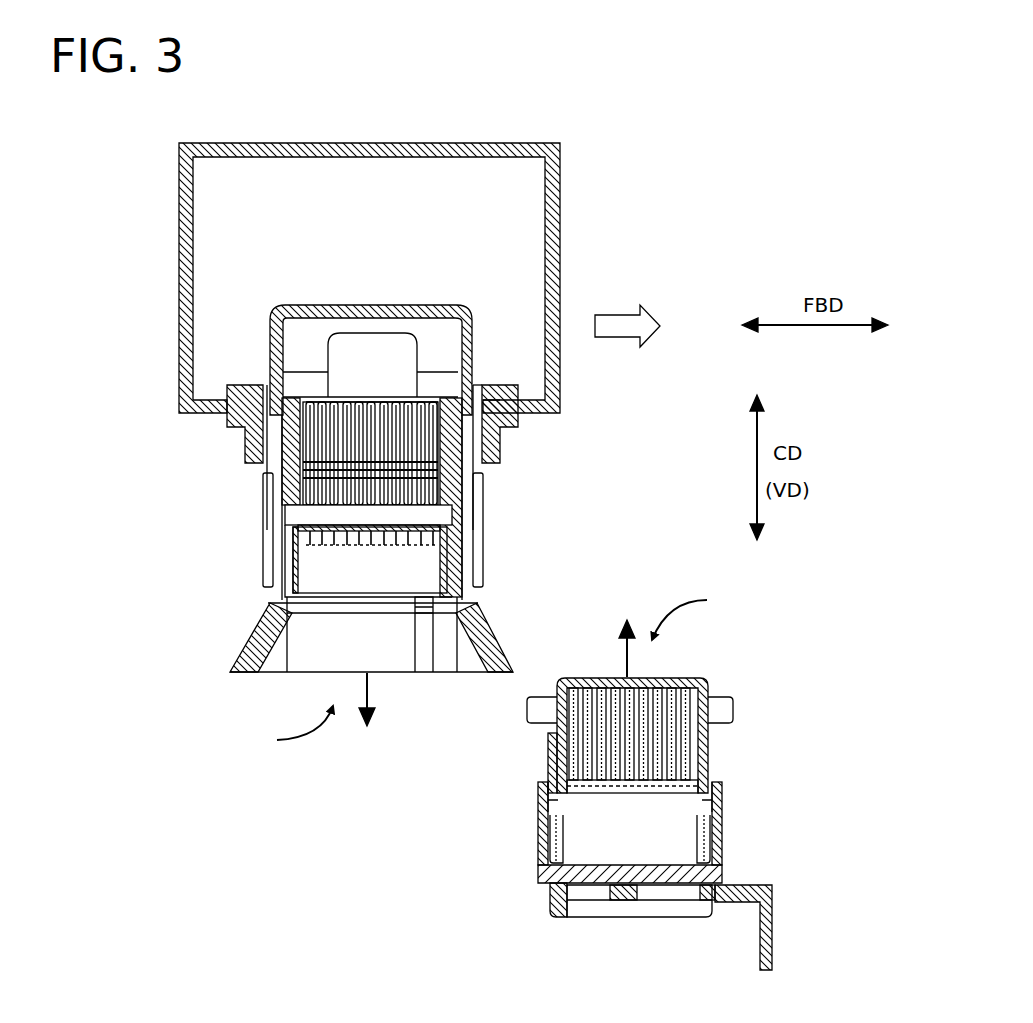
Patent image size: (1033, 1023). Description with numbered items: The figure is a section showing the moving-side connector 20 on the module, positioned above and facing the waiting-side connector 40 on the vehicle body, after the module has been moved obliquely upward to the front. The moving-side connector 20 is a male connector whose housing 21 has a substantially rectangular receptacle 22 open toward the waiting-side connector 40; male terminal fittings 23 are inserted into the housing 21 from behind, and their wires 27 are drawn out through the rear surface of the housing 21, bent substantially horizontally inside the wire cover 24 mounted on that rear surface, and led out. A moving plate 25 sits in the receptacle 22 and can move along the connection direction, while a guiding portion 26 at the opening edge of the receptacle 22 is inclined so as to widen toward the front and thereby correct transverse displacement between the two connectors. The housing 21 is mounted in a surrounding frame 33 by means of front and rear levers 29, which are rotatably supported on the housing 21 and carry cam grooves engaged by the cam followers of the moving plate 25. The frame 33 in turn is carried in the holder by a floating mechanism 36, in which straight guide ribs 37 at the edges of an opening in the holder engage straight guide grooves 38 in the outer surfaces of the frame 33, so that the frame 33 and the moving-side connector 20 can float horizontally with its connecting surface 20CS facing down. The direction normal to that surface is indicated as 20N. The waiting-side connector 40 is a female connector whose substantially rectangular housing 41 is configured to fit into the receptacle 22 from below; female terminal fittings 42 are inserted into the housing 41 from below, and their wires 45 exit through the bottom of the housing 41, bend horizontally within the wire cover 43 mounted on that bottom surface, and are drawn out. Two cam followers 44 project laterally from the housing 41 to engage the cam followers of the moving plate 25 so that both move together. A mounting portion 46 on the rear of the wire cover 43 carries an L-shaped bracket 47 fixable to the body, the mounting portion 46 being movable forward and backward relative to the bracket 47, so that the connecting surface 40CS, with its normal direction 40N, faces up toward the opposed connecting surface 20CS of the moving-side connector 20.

The moving-side connector 20 is at (534, 500).
The normal direction of first connector 20N is at (372, 692).
The connecting surface 20CS is at (273, 729).
The housing 21 is at (293, 438).
The receptacle 22 is at (460, 594).
The male terminal fittings 23 is at (303, 488).
The wire cover 24 is at (462, 313).
The moving plate 25 is at (337, 538).
The guiding portion 26 is at (507, 648).
The wires 27 is at (327, 400).
The levers 29 is at (267, 553).
The frame 33 is at (495, 452).
The floating mechanism 36 is at (627, 225).
The guide ribs 37 is at (495, 398).
The guide grooves 38 is at (477, 380).
The waiting-side connector 40 is at (455, 813).
The normal direction of second connector 40N is at (627, 652).
The connecting surface 40CS is at (710, 614).
The housing 41 is at (558, 753).
The female terminal fittings 42 is at (570, 728).
The wire cover 43 is at (713, 812).
The cam followers 44 is at (537, 712).
The wires 45 is at (595, 792).
The mounting portion 46 is at (600, 907).
The bracket 47 is at (763, 923).